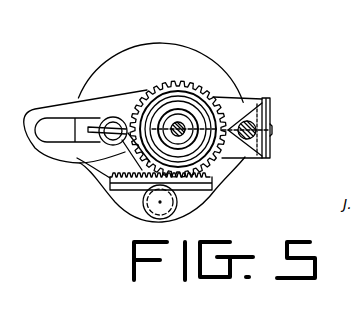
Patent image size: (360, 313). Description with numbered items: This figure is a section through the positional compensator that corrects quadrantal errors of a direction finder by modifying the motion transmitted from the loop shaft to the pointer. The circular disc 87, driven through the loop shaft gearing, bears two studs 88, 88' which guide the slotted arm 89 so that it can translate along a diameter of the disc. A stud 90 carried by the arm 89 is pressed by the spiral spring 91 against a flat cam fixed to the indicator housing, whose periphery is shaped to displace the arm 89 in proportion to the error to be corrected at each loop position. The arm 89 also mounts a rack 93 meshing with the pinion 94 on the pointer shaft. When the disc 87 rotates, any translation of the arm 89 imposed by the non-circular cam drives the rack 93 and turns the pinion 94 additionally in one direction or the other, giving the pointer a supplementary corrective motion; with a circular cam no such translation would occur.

The circular disc 87 is at (128, 57).
The stud 88 is at (101, 115).
The stud 88' is at (265, 101).
The slotted arm 89 is at (273, 107).
The stud 90 is at (268, 128).
The spiral spring 91 is at (168, 92).
The rack 93 is at (113, 180).
The pinion 94 is at (189, 83).